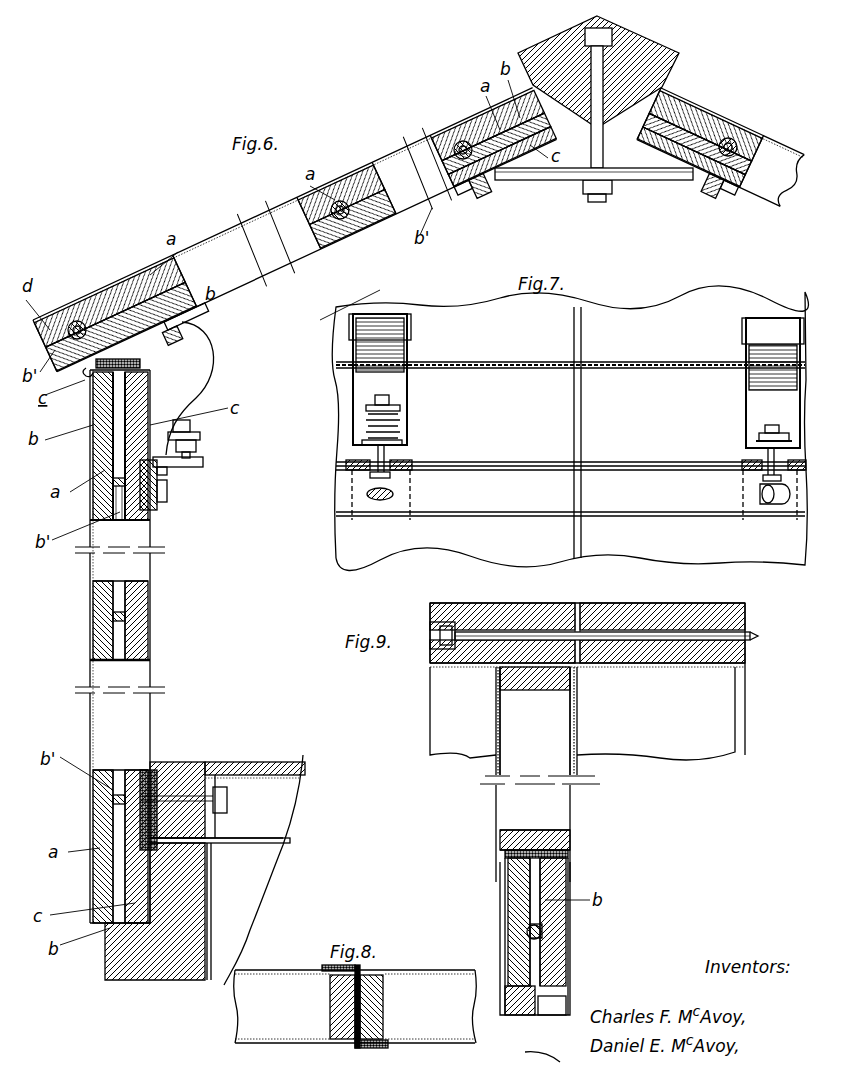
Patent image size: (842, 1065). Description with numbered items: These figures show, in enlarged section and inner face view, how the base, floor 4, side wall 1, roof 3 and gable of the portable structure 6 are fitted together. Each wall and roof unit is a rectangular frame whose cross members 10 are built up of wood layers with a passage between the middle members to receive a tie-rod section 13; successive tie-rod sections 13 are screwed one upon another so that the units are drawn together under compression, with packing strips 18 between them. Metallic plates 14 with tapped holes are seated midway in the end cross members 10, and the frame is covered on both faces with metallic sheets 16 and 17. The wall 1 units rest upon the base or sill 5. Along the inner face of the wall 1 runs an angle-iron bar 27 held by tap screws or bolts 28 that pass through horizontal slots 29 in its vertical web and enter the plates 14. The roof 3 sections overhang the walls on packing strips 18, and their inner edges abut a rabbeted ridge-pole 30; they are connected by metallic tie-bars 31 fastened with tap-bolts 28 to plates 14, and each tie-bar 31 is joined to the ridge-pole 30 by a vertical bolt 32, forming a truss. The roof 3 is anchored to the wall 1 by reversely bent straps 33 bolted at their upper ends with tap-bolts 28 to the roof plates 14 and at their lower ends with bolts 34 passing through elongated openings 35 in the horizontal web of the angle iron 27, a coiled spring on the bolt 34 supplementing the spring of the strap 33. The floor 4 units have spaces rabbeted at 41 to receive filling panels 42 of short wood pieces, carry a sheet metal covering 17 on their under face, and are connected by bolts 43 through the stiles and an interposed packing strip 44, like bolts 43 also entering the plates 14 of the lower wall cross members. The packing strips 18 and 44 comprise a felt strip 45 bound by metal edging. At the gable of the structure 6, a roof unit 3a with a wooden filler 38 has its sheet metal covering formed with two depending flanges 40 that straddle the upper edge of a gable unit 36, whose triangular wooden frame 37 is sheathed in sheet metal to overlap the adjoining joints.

In FIG. 6, the wall panel 1 is at (114, 646).
In FIG. 7, the wall panel 1 is at (569, 532).
In FIG. 9, the wall panel 1 is at (523, 932).
In FIG. 6, the roof panel 3 is at (418, 230).
In FIG. 7, the roof panel 3 is at (570, 428).
In FIG. 9, the roof panel 3 is at (587, 681).
In FIG. 9, the roof unit 3a is at (455, 710).
In FIG. 6, the floor 4 is at (300, 765).
In FIG. 6, the base or sill 5 is at (195, 895).
In FIG. 6, the sheathing / ground 6 is at (240, 920).
In FIG. 6, the cross member 10 is at (215, 272).
In FIG. 6, the tie-rod section 13 is at (77, 322).
In FIG. 6, the metallic plate 14 is at (192, 315).
In FIG. 7, the metallic plate 14 is at (410, 318).
In FIG. 6, the metallic sheet 16 is at (115, 430).
In FIG. 9, the metallic sheet 16 is at (665, 612).
In FIG. 6, the metallic sheet 17 is at (150, 645).
In FIG. 9, the metallic sheet 17 is at (700, 667).
In FIG. 6, the packing strip 18 is at (84, 374).
In FIG. 7, the packing strip 18 is at (650, 370).
In FIG. 6, the angle-iron bar 27 is at (205, 462).
In FIG. 7, the angle-iron bar 27 is at (570, 489).
In FIG. 6, the tap screw or bolt 28 is at (168, 350).
In FIG. 7, the tap screw or bolt 28 is at (380, 500).
In FIG. 7, the slot 29 is at (394, 494).
In FIG. 6, the ridge-pole 30 is at (675, 66).
In FIG. 6, the tie-bar 31 is at (650, 178).
In FIG. 6, the vertical bolt 32 is at (590, 165).
In FIG. 6, the strap or tie-member 33 is at (208, 338).
In FIG. 7, the strap or tie-member 33 is at (390, 340).
In FIG. 6, the bolt 34 is at (200, 440).
In FIG. 7, the bolt 34 is at (386, 455).
In FIG. 7, the slot or elongated opening 35 is at (365, 470).
In FIG. 9, the gable unit 36 is at (540, 841).
In FIG. 8, the gable unit 36 is at (355, 1006).
In FIG. 9, the triangular frame 37 is at (548, 690).
In FIG. 8, the triangular frame 37 is at (332, 1005).
In FIG. 9, the filler 38 is at (500, 610).
In FIG. 9, the depending fold or flange 40 is at (496, 710).
In FIG. 6, the rabbet 41 is at (222, 770).
In FIG. 6, the filling panel 42 is at (282, 770).
In FIG. 6, the bolt 43 is at (226, 808).
In FIG. 6, the packing strip 44 is at (208, 845).
In FIG. 6, the strip of felt 45 is at (125, 360).